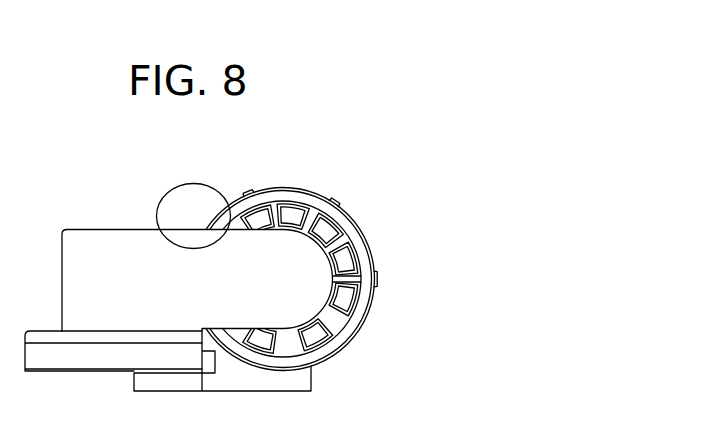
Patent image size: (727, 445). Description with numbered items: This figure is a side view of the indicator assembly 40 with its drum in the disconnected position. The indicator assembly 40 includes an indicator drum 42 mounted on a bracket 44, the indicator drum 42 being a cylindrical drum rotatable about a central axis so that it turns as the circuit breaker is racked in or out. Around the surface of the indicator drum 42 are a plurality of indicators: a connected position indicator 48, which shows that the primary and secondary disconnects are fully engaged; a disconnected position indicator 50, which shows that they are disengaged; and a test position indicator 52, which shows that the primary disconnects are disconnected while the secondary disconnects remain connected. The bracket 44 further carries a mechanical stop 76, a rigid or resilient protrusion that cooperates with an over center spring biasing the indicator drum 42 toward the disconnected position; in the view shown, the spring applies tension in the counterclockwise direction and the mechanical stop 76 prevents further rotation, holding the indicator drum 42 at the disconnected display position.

The indicator assembly 40 is at (357, 171).
The indicator drum 42 is at (323, 352).
The bracket 44 is at (95, 358).
The connected position indicator 48 is at (250, 187).
The disconnected position indicator 50 is at (378, 279).
The test position indicator 52 is at (340, 200).
The mechanical stop 76 is at (167, 193).